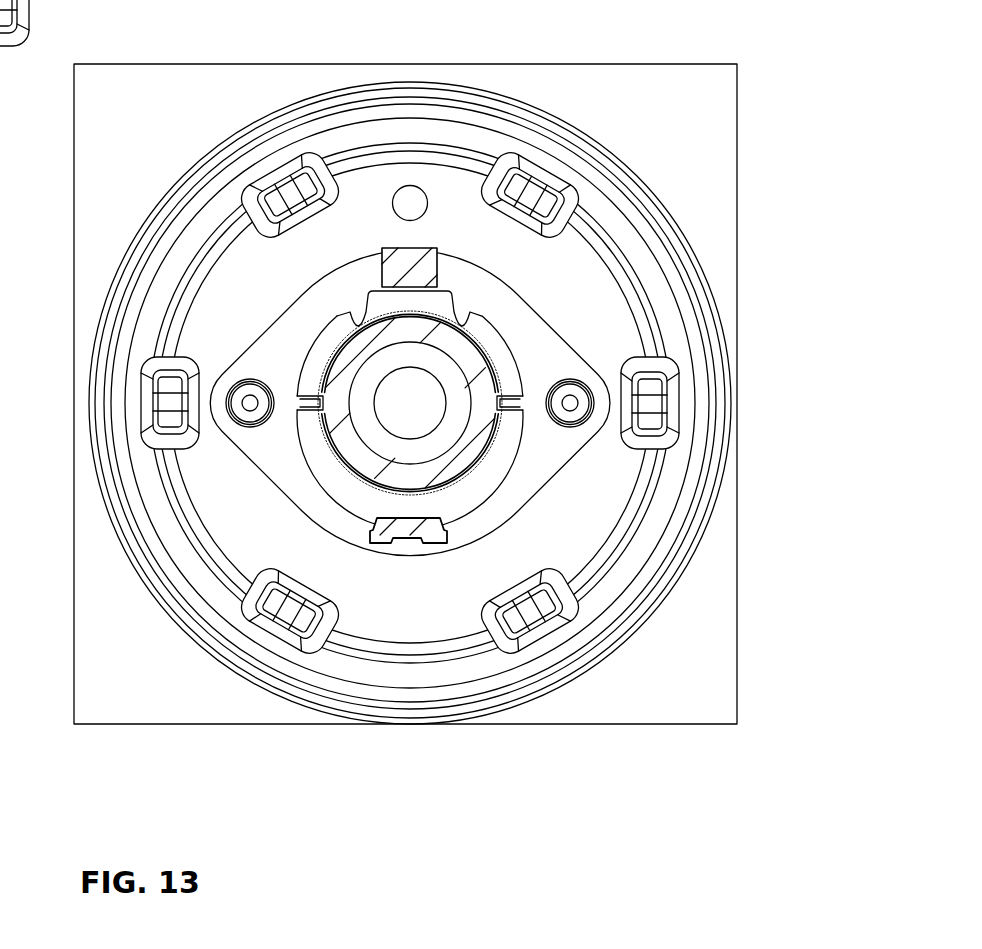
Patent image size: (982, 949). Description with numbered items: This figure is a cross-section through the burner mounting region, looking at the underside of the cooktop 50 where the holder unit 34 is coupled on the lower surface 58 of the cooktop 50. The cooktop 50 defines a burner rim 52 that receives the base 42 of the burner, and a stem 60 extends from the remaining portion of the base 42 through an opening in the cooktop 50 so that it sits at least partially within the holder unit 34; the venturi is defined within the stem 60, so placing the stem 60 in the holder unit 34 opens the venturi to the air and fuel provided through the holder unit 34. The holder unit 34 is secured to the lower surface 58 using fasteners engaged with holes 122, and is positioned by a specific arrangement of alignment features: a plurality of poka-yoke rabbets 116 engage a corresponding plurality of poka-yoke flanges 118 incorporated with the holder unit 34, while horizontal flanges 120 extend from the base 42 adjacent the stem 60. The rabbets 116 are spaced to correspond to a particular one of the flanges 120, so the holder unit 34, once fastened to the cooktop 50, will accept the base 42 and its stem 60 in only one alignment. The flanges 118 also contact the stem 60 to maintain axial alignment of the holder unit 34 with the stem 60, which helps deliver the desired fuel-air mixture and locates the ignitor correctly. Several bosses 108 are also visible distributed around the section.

The holder unit 34 is at (534, 350).
The base 42 is at (352, 484).
The cooktop 50 is at (598, 86).
The burner rim 52 is at (668, 263).
The lower surface 58 is at (662, 106).
The stem 60 is at (469, 458).
The boss 108 is at (290, 192).
The poka-yoke rabbets 116 is at (302, 396).
The poka-yoke flanges 118 is at (356, 322).
The horizontal flanges 120 is at (303, 413).
The holes 122 is at (248, 398).